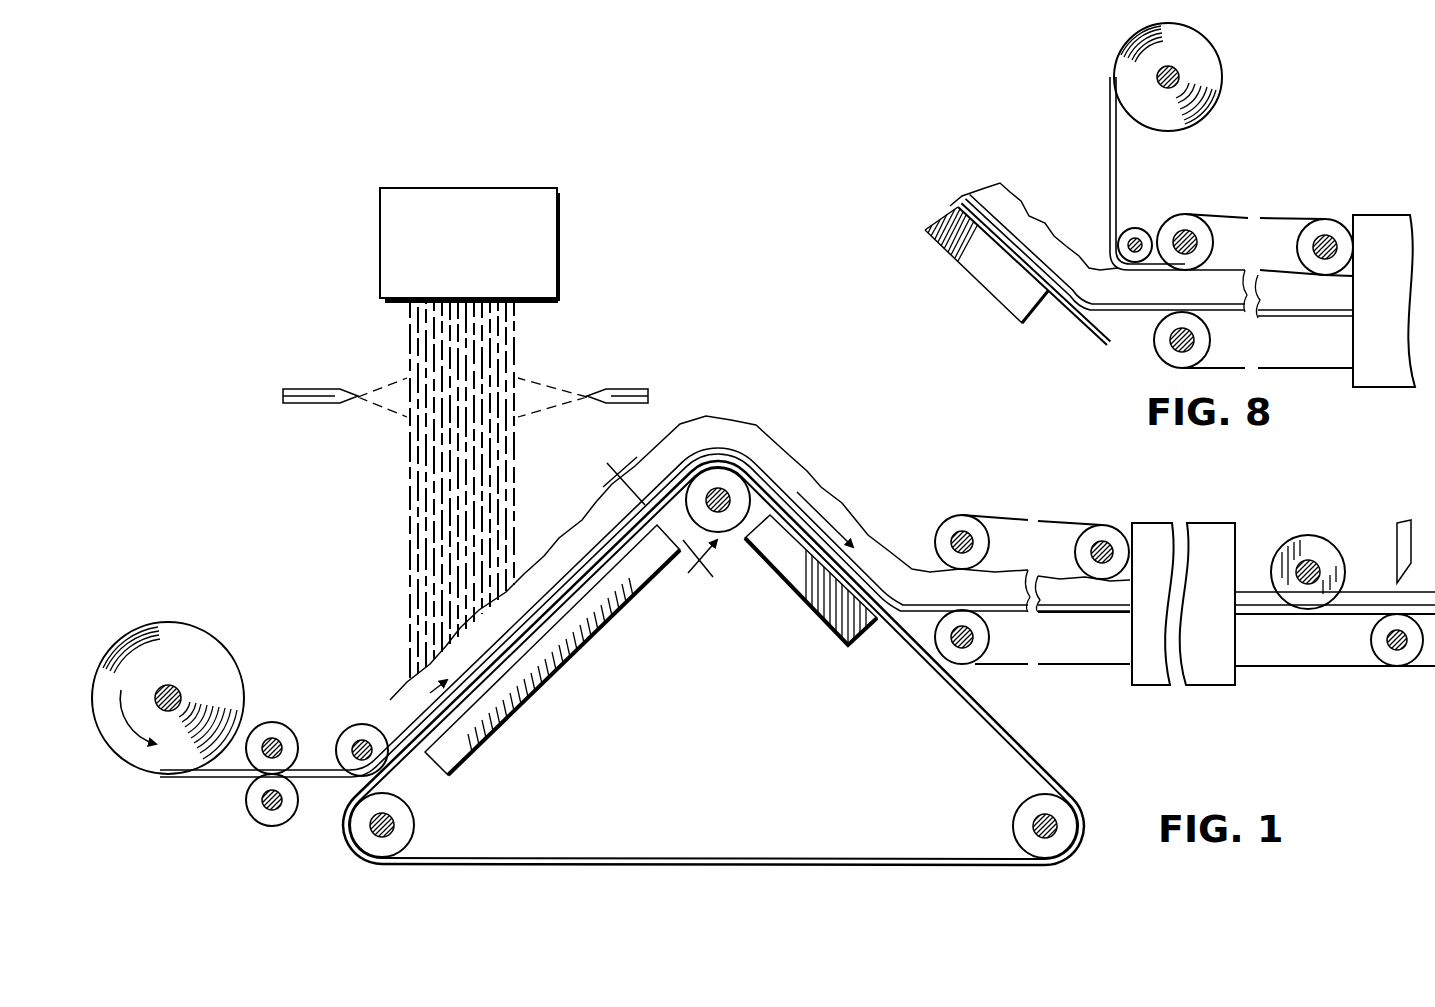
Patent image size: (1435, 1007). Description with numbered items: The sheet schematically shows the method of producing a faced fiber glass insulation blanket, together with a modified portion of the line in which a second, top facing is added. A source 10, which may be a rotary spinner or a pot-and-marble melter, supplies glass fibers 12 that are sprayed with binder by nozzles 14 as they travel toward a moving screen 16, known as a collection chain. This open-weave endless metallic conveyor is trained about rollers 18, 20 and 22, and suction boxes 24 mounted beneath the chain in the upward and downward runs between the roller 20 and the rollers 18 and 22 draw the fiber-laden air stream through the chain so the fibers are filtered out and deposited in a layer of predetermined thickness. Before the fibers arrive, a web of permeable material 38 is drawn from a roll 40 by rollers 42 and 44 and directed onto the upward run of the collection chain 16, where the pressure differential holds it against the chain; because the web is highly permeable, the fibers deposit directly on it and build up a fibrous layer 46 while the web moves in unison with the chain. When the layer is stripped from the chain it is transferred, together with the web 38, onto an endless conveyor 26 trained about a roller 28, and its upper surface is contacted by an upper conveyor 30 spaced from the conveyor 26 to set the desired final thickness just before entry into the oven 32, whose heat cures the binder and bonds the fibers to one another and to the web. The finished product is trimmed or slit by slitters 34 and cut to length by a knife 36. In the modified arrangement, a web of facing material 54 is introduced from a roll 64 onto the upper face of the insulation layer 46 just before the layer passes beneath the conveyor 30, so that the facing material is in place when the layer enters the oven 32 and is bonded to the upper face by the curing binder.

In FIG. 1, the source 10 is at (379, 228).
In FIG. 1, the glass fibers 12 is at (405, 470).
In FIG. 1, the nozzles 14 is at (324, 388).
In FIG. 1, the moving screen 16 is at (566, 857).
In FIG. 8, the moving screen 16 is at (1079, 322).
In FIG. 1, the roller 18 is at (414, 825).
In FIG. 1, the roller 20 is at (724, 520).
In FIG. 1, the roller 22 is at (1019, 823).
In FIG. 1, the suction boxes 24 is at (553, 653).
In FIG. 8, the suction boxes 24 is at (937, 248).
In FIG. 1, the endless conveyor 26 is at (1067, 667).
In FIG. 1, the roller 28 is at (972, 659).
In FIG. 1, the upper conveyor 30 is at (1059, 521).
In FIG. 8, the upper conveyor 30 is at (1292, 216).
In FIG. 1, the oven 32 is at (1176, 530).
In FIG. 8, the oven 32 is at (1379, 226).
In FIG. 1, the slitters 34 is at (1318, 552).
In FIG. 1, the knife 36 is at (1396, 536).
In FIG. 1, the web of permeable material 38 is at (221, 779).
In FIG. 8, the web of permeable material 38 is at (1114, 312).
In FIG. 1, the roll 40 is at (179, 632).
In FIG. 1, the roller 42 is at (274, 722).
In FIG. 1, the roller 44 is at (272, 826).
In FIG. 1, the fibrous layer 46 is at (579, 553).
In FIG. 8, the fibrous layer 46 is at (1016, 214).
In FIG. 8, the web of facing material 54 is at (1117, 180).
In FIG. 8, the roll 64 is at (1212, 52).